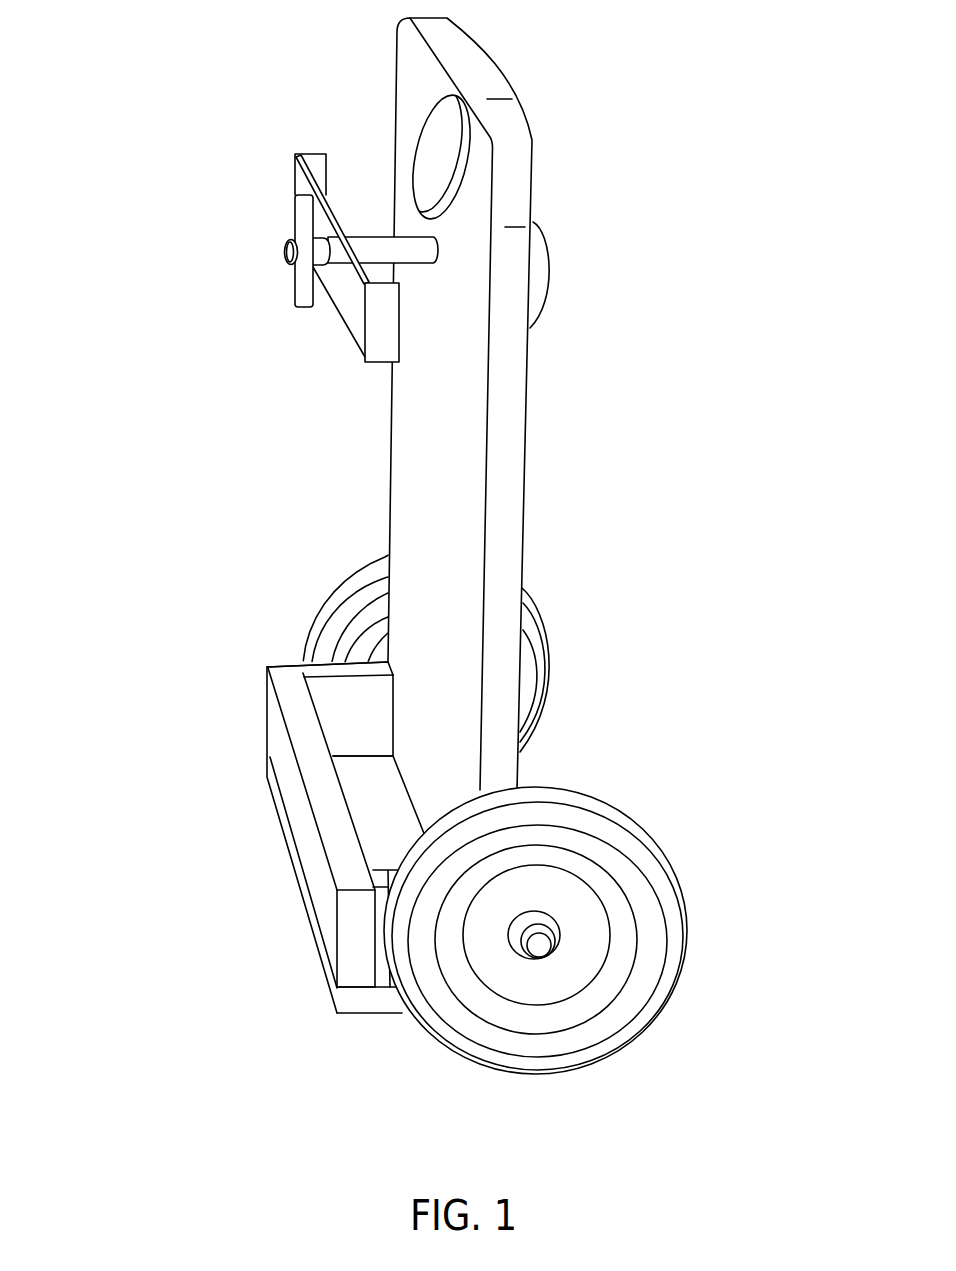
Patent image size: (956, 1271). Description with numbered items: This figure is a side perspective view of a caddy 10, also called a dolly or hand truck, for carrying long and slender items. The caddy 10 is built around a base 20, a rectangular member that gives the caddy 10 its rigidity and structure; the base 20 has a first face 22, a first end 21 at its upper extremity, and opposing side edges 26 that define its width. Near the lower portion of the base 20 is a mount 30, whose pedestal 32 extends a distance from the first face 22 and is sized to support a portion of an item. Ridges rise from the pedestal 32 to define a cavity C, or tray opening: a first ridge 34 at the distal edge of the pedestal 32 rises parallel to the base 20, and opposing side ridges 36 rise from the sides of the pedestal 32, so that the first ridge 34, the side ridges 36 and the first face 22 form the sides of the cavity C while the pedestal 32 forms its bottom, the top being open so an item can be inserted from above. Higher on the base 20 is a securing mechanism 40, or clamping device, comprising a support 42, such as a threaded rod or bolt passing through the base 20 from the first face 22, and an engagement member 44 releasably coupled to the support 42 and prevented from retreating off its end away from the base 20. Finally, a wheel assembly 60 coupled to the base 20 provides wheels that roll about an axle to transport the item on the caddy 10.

The caddy 10 is at (440, 547).
The base 20 is at (473, 427).
The first end 21 is at (478, 68).
The first face 22 is at (446, 440).
The opposing side edges 26 is at (510, 508).
The mount 30 is at (306, 824).
The pedestal 32 is at (356, 1006).
The first ridge 34 is at (323, 908).
The opposing side ridges 36 is at (333, 714).
The securing mechanism 40 is at (326, 268).
The support 42 is at (385, 248).
The engagement member 44 is at (350, 293).
The wheel assembly 60 is at (699, 839).
The cavity C is at (398, 791).